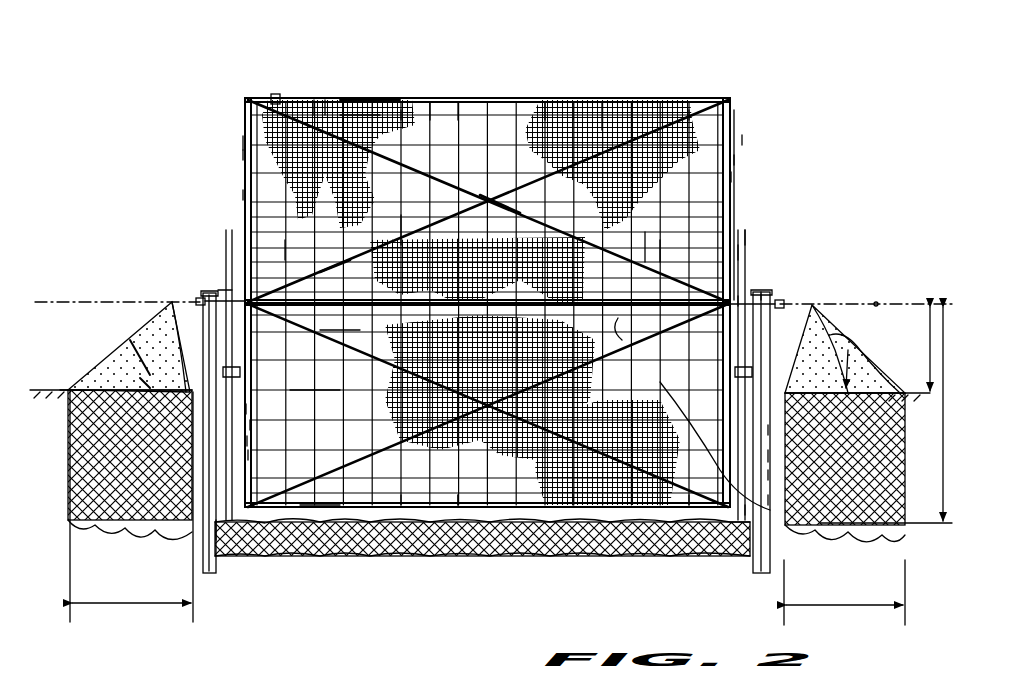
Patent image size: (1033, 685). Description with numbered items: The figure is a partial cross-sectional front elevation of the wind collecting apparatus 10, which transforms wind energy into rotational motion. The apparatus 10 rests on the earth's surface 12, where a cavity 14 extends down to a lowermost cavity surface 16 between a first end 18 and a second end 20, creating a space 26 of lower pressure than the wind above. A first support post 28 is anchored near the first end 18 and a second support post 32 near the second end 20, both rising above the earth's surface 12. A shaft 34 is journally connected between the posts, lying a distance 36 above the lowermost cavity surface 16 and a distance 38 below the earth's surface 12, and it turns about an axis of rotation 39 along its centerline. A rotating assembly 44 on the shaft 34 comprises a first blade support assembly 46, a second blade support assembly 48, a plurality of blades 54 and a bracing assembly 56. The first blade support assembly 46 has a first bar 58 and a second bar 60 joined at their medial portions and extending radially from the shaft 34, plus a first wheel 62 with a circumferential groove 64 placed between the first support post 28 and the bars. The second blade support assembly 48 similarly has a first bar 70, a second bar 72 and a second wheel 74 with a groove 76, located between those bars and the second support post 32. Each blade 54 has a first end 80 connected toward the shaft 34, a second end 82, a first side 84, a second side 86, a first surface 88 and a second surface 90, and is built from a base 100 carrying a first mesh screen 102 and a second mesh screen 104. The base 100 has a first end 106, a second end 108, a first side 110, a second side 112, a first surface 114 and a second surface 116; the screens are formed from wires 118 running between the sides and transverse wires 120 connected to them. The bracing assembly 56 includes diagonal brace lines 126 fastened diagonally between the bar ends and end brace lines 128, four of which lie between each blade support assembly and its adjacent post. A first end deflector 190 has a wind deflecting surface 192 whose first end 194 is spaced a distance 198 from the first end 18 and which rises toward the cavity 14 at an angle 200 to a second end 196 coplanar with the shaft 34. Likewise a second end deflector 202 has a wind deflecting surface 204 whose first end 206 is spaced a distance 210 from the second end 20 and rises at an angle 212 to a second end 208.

The wind collecting apparatus 10 is at (228, 68).
The earth's surface 12 is at (48, 390).
The cavity 14 is at (300, 520).
The lowermost cavity surface 16 is at (420, 520).
The first end 18 is at (245, 392).
The second end 20 is at (770, 465).
The space 26 is at (770, 500).
The first support post 28 is at (203, 297).
The second support post 32 is at (770, 293).
The shaft 34 is at (222, 290).
The distance 36 is at (941, 445).
The distance 38 is at (928, 325).
The axis of rotation 39 is at (878, 302).
The rotating assembly 44 is at (755, 97).
The first blade support assembly 46 is at (230, 172).
The second blade support assembly 48 is at (742, 134).
The blades 54 is at (575, 506).
The bracing assembly 56 is at (276, 94).
The first bar 58 is at (243, 110).
The second bar 60 is at (300, 300).
The first wheel 62 is at (230, 235).
The groove 64 is at (240, 260).
The first bar 70 is at (740, 160).
The second bar 72 is at (762, 280).
The second wheel 74 is at (752, 250).
The groove 76 is at (745, 235).
The first end 80 is at (620, 340).
The second end 82 is at (318, 684).
The first side 84 is at (255, 455).
The second side 86 is at (770, 455).
The first surface 88 is at (330, 300).
The second surface 90 is at (355, 508).
The base 100 is at (700, 508).
The first mesh screen 102 is at (372, 98).
The second mesh screen 104 is at (392, 508).
The first end 106 is at (332, 332).
The second end 108 is at (352, 684).
The first side 110 is at (250, 440).
The second side 112 is at (770, 430).
The first surface 114 is at (565, 110).
The second surface 116 is at (245, 522).
The wires 118 is at (760, 510).
The wires 120 is at (462, 508).
The diagonal brace lines 126 is at (742, 300).
The end brace lines 128 is at (770, 478).
The first end deflector 190 is at (125, 322).
The wind deflecting surface 192 is at (140, 356).
The first end 194 is at (70, 388).
The second end 196 is at (170, 302).
The distance 198 is at (131, 506).
The angle 200 is at (145, 382).
The second end deflector 202 is at (832, 335).
The wind deflecting surface 204 is at (862, 350).
The first end 206 is at (902, 393).
The second end 208 is at (814, 304).
The distance 210 is at (844, 592).
The angle 212 is at (850, 350).